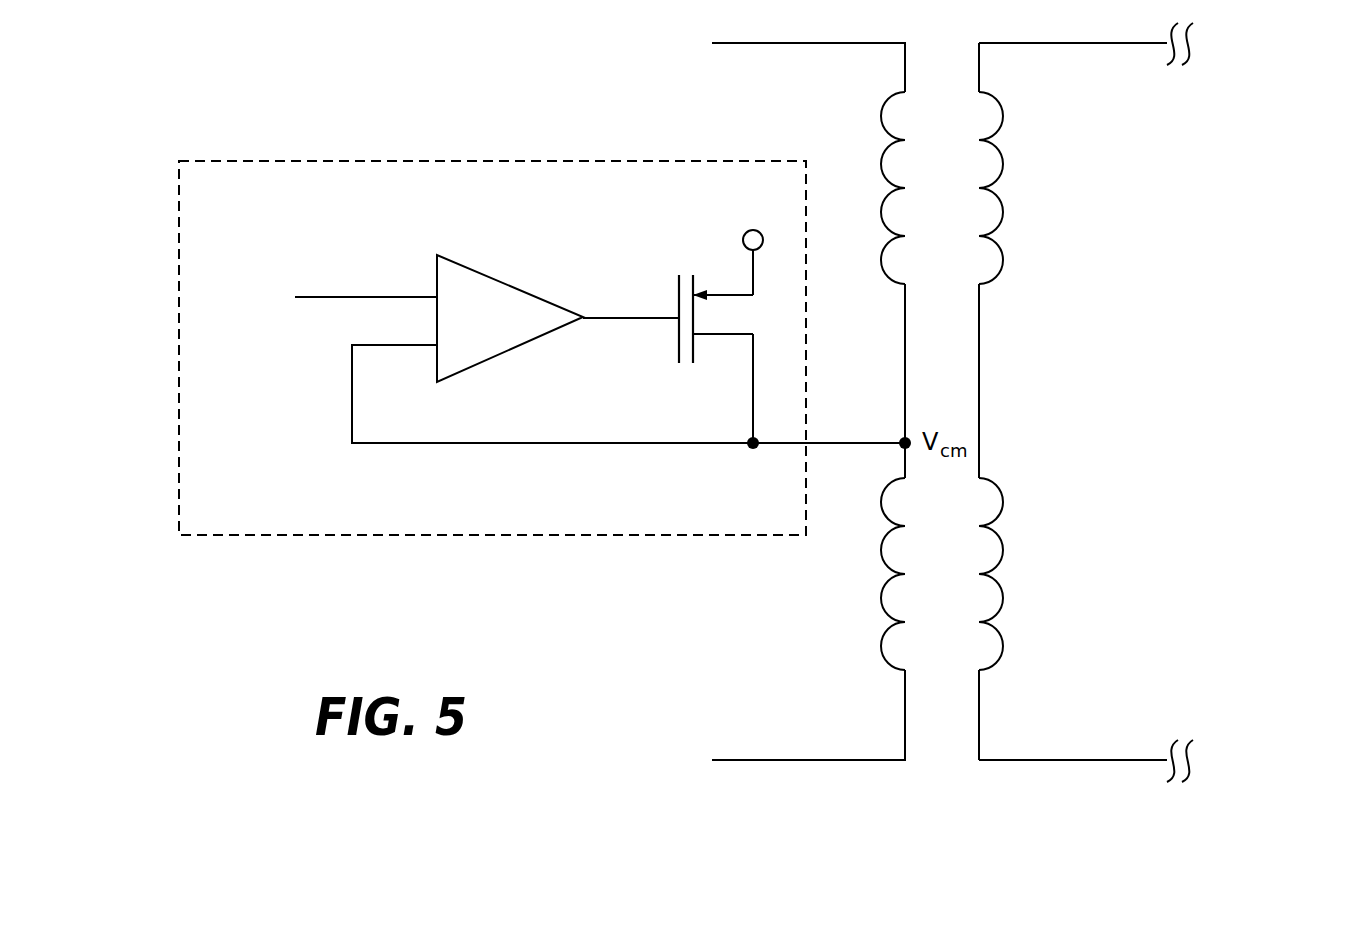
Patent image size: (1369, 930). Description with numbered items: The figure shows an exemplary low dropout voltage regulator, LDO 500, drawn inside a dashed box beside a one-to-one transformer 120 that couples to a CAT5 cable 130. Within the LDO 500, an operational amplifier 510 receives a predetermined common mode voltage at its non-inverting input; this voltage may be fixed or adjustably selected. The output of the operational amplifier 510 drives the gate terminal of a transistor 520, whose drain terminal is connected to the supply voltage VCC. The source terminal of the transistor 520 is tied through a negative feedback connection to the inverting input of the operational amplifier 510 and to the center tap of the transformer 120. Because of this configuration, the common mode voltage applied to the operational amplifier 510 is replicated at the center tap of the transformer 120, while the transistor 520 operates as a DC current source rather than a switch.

The LDO 500 is at (383, 142).
The operational amplifier 510 is at (500, 272).
The transistor 520 is at (682, 262).
The transformer 120 is at (946, 761).
The CAT5 cable 130 is at (1265, 392).